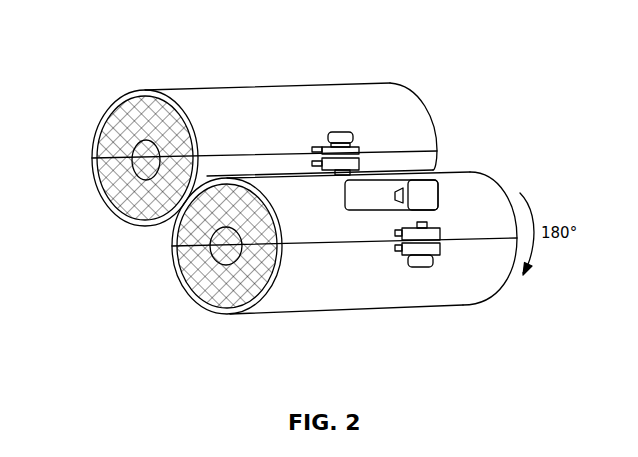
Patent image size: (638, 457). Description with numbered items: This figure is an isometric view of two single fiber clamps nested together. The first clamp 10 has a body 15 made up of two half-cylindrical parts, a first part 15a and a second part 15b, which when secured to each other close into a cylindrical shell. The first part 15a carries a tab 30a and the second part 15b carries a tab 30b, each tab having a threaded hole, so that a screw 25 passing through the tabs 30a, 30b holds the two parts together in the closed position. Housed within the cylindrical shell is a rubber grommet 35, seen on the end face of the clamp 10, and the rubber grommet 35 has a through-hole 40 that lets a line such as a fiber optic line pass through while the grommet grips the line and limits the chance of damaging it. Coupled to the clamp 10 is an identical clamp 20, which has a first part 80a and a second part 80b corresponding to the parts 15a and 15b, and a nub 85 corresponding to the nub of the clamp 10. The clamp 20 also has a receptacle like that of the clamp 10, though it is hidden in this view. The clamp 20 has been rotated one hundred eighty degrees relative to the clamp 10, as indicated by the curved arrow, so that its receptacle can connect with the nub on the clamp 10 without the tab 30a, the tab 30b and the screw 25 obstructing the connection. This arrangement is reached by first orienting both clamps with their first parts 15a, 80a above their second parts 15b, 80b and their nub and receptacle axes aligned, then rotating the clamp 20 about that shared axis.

The single fiber clamp 10 is at (238, 142).
The body 15 is at (333, 75).
The first part 15a is at (190, 100).
The second part 15b is at (252, 165).
The clamp 20 is at (344, 274).
The screw 25 is at (343, 132).
The tab 30a is at (359, 148).
The tab 30b is at (359, 162).
The rubber grommet 35 is at (130, 194).
The through-hole 40 is at (147, 148).
The first part 80a is at (280, 303).
The second part 80b is at (338, 237).
The nub 85 is at (368, 198).